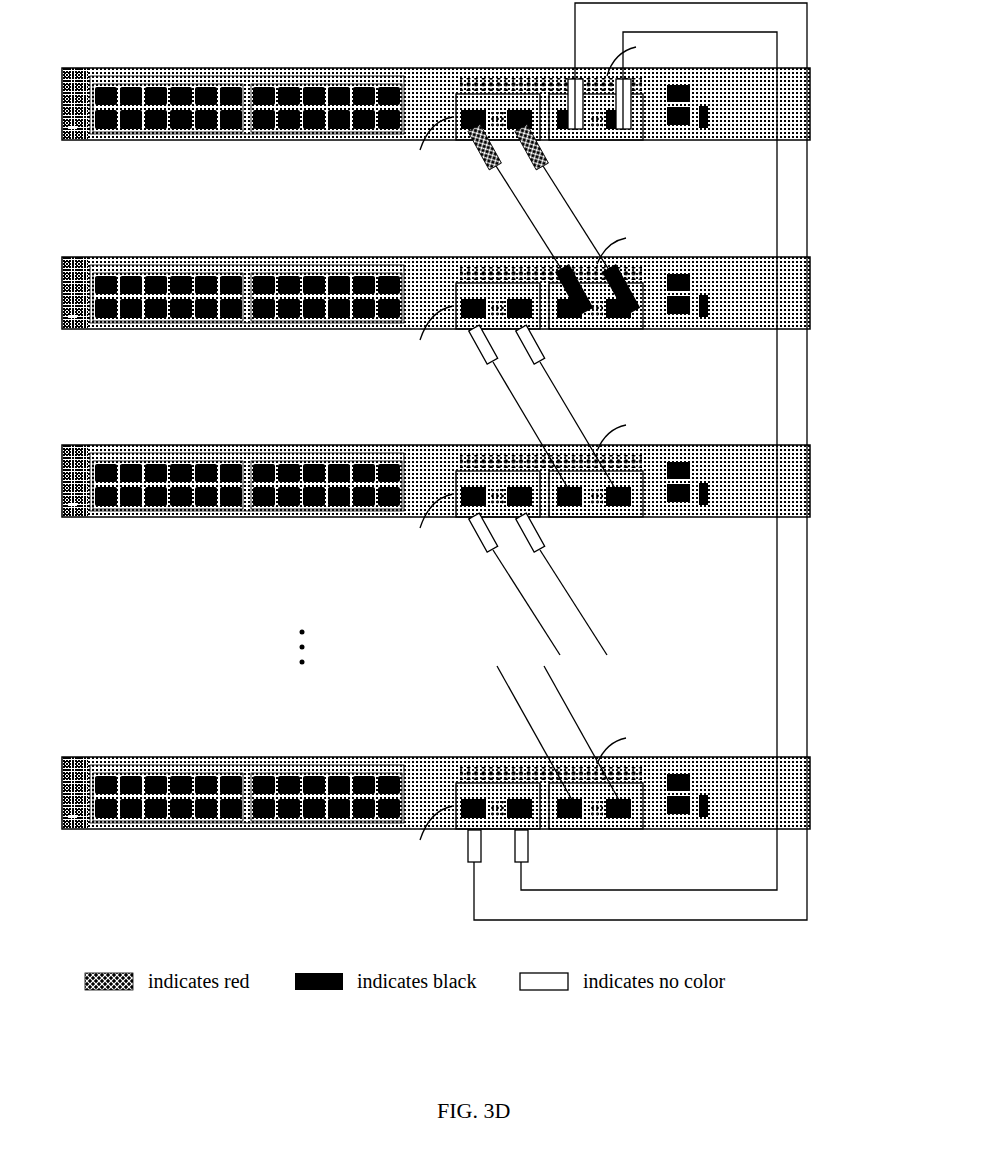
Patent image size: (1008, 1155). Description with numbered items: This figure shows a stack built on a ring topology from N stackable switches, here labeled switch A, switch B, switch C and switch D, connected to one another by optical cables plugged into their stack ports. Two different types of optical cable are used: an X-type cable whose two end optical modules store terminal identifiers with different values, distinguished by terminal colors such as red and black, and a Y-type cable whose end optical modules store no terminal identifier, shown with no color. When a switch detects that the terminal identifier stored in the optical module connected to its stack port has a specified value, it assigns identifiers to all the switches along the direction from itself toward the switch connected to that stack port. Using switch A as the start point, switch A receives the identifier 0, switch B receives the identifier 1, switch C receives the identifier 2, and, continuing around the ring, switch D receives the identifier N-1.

The identifier of switch A 0 is at (456, 111).
The identifier of switch B 1 is at (456, 301).
The identifier of switch C 2 is at (456, 489).
The identifier of switch D N-1 is at (459, 801).